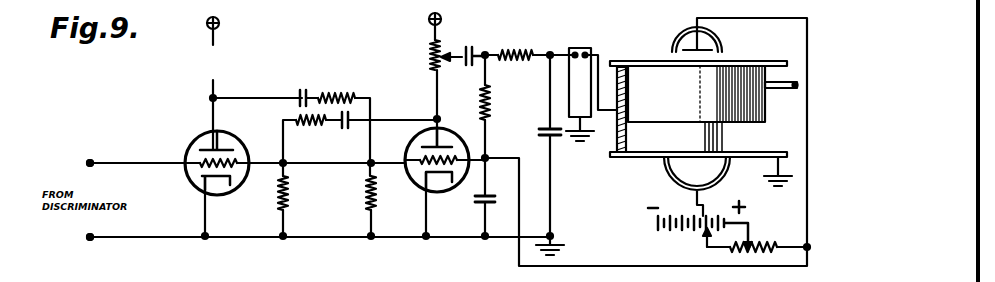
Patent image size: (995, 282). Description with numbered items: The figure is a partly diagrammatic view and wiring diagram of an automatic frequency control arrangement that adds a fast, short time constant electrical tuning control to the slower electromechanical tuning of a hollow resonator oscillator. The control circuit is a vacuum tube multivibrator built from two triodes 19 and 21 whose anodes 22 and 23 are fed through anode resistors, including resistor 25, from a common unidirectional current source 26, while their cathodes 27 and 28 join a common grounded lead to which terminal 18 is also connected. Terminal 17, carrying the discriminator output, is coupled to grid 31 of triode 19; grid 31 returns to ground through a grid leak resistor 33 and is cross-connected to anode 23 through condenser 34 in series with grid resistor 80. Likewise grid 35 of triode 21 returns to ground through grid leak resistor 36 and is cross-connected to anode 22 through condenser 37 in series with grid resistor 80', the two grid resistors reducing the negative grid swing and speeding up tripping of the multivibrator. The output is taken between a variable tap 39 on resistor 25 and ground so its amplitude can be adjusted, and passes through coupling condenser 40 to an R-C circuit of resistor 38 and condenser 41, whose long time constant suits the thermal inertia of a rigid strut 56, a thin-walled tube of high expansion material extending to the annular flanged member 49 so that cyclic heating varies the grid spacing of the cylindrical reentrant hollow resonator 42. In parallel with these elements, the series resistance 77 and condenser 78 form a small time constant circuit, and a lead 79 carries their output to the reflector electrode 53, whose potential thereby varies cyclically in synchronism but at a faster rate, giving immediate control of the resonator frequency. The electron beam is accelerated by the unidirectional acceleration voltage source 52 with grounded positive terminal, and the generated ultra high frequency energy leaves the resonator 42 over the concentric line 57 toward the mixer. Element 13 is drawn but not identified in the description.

The resistor 13 is at (578, 46).
The terminal 17 is at (76, 164).
The terminal 18 is at (76, 240).
The triode 19 is at (191, 137).
The triode 21 is at (412, 200).
The anode 22 is at (231, 143).
The anode 23 is at (452, 128).
The resistor 25 is at (432, 52).
The unidirectional current source 26 is at (221, 20).
The cathode 27 is at (217, 186).
The cathode 28 is at (447, 183).
The grid 31 is at (194, 180).
The grid leak resistor 33 is at (291, 195).
The condenser 34 is at (349, 128).
The grid 35 is at (420, 158).
The grid leak resistor 36 is at (367, 200).
The condenser 37 is at (305, 93).
The resistor 38 is at (516, 50).
The variable tap 39 is at (448, 54).
The coupling condenser 40 is at (474, 46).
The condenser 41 is at (546, 133).
The cylindrical reentrant hollow resonator 42 is at (746, 123).
The annular flanged member 49 is at (645, 160).
The unidirectional acceleration voltage source 52 is at (655, 223).
The reflector electrode 53 is at (683, 50).
The rigid strut 56 is at (616, 146).
The concentric line 57 is at (778, 80).
The resistance 77 is at (491, 110).
The condenser 78 is at (488, 198).
The lead 79 is at (606, 264).
The grid resistor 80 is at (346, 84).
The grid resistor 80' is at (309, 134).